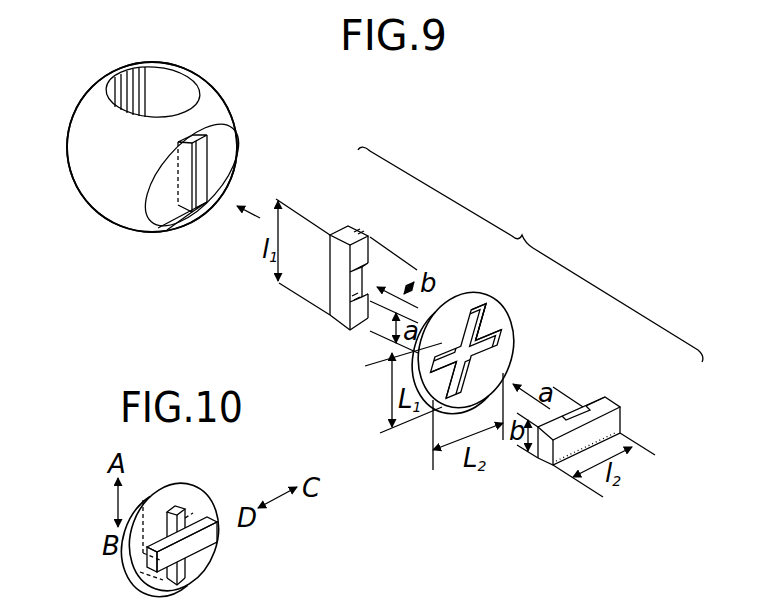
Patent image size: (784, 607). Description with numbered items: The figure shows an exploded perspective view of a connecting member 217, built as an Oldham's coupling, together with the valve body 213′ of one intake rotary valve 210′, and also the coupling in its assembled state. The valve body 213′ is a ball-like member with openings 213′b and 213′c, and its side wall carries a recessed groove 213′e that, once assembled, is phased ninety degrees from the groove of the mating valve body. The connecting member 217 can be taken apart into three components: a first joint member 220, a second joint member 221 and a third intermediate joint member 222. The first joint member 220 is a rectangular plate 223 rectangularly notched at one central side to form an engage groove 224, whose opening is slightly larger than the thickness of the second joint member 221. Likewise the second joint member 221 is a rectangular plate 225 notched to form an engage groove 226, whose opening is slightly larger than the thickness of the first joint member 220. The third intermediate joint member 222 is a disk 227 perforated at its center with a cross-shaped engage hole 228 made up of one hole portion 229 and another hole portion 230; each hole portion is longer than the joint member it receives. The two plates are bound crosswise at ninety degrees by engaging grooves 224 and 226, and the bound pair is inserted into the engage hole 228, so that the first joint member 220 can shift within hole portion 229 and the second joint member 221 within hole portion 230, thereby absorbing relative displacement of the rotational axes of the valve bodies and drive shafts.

In FIG. 9, the intake rotary valve 210′ is at (87, 90).
In FIG. 9, the valve body 213′ is at (72, 163).
In FIG. 9, the cylindrical bore in ball 213′b is at (171, 68).
In FIG. 9, the side opening of ball 213′c is at (233, 147).
In FIG. 9, the recessed groove 213′e is at (197, 203).
In FIG. 9, the first joint member 220 is at (339, 274).
In FIG. 10, the first joint member 220 is at (143, 503).
In FIG. 9, the rectangular plate 223 is at (334, 258).
In FIG. 9, the engage groove 224 is at (330, 303).
In FIG. 9, the connecting member 217 is at (530, 254).
In FIG. 10, the connecting member 217 is at (219, 492).
In FIG. 9, the third intermediate joint member 222 is at (482, 367).
In FIG. 10, the third intermediate joint member 222 is at (132, 543).
In FIG. 9, the disk 227 is at (500, 320).
In FIG. 9, the cross-shaped engage hole 228 is at (466, 358).
In FIG. 9, the one hole portion 229 is at (471, 314).
In FIG. 9, the other hole portion 230 is at (445, 380).
In FIG. 9, the second joint member 221 is at (609, 410).
In FIG. 10, the second joint member 221 is at (214, 537).
In FIG. 9, the rectangular plate 225 is at (607, 402).
In FIG. 9, the engage groove 226 is at (584, 409).